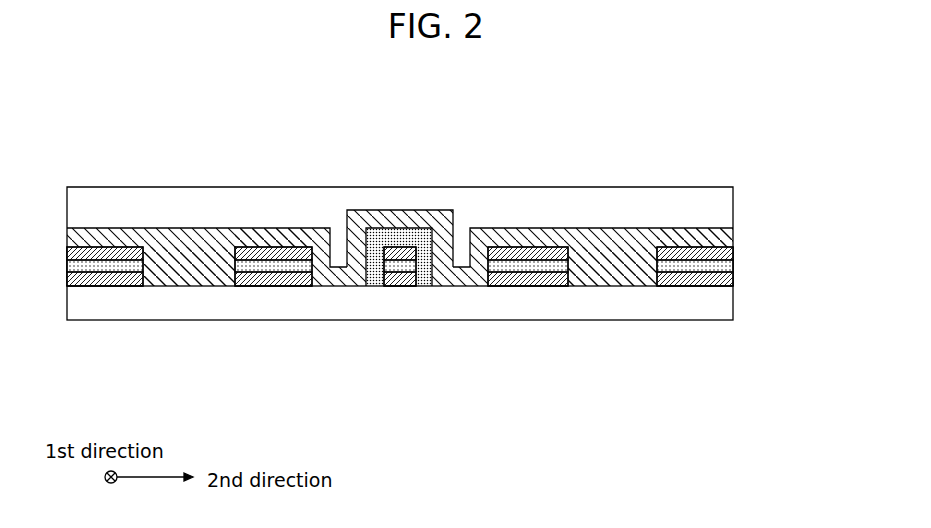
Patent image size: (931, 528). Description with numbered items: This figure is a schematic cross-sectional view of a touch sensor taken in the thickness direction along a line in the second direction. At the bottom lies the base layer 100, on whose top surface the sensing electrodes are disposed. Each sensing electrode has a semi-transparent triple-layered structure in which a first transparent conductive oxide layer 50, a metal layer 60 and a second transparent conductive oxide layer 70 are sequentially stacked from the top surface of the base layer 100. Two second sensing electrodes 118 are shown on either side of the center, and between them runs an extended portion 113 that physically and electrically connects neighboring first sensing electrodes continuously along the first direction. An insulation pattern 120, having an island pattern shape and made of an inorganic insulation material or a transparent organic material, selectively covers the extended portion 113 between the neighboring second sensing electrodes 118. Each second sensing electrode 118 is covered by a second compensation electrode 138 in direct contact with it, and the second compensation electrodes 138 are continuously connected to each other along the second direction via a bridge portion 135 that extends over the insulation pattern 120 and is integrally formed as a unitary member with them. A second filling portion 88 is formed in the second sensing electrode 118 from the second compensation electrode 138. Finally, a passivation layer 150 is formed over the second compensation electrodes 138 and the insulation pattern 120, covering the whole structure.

The first transparent conductive oxide layer 50 is at (249, 281).
The metal layer 60 is at (262, 268).
The second transparent conductive oxide layer 70 is at (297, 256).
The second filling portion 88 is at (190, 270).
The base layer 100 is at (735, 300).
The extended portion 113 is at (475, 382).
The second sensing electrode 118 is at (197, 382).
The insulation pattern 120 is at (420, 213).
The bridge portion 135 is at (366, 220).
The second compensation electrode 138 is at (277, 230).
The passivation layer 150 is at (735, 205).